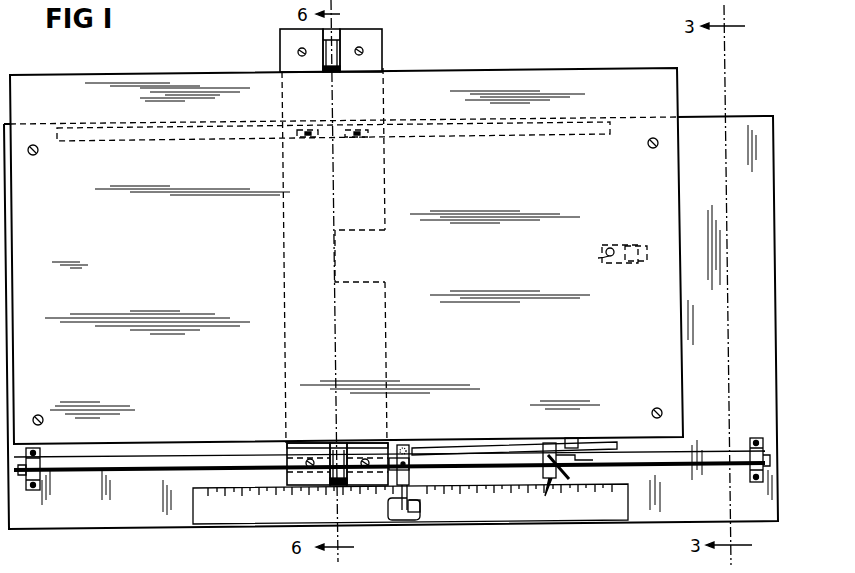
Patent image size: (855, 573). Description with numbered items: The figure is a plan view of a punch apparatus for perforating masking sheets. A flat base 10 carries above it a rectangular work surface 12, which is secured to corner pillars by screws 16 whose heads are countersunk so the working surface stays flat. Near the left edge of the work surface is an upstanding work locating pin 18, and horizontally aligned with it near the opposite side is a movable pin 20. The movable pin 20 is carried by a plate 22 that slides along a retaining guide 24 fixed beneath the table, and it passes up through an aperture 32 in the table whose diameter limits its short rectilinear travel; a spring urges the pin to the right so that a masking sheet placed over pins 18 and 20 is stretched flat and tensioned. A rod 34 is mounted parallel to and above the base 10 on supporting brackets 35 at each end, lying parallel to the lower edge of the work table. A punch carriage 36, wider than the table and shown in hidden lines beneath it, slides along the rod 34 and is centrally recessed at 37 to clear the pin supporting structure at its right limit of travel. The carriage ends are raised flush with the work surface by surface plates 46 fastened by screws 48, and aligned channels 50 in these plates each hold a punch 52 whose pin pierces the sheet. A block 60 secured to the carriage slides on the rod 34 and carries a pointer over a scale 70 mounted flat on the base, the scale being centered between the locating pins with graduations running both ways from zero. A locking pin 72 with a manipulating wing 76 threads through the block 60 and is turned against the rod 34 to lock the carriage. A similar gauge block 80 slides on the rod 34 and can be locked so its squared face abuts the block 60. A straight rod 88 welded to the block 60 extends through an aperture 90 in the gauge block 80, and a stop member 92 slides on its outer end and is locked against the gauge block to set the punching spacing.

The flat base 10 is at (148, 512).
The work surface 12 is at (232, 287).
The screws 16 is at (36, 156).
The work locating pin 18 is at (62, 262).
The movable pin 20 is at (612, 249).
The plate 22 is at (618, 265).
The retaining guide 24 is at (647, 254).
The aperture 32 is at (598, 258).
The rod 34 is at (694, 462).
The supporting brackets 35 is at (44, 482).
The punch carriage 36 is at (387, 352).
The central recess 37 is at (357, 280).
The surface plates 46 is at (375, 56).
The screws 48 is at (360, 452).
The channels 50 is at (334, 33).
The punch 52 is at (320, 57).
The block 60 is at (405, 466).
The scale 70 is at (512, 510).
The locking pin 72 is at (390, 512).
The manipulating wing 76 is at (417, 514).
The gauge block 80 is at (551, 444).
The straight rod 88 is at (473, 449).
The aperture 90 is at (546, 452).
The stop member 92 is at (578, 441).